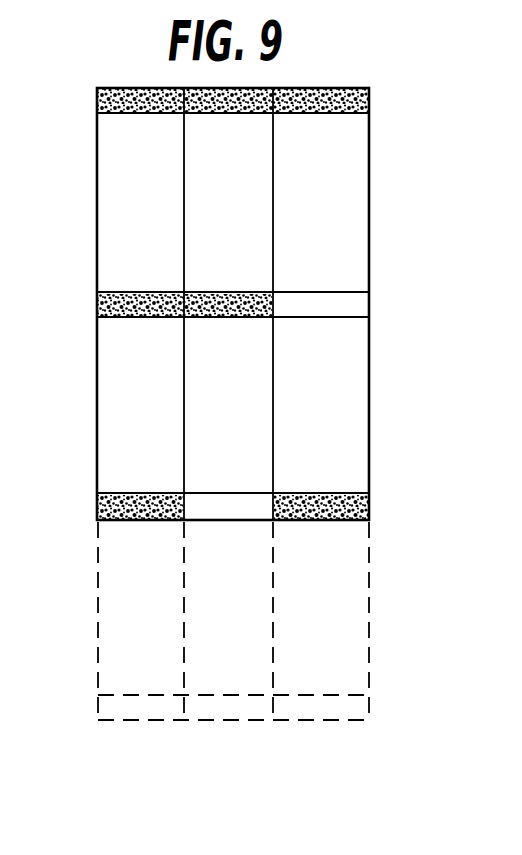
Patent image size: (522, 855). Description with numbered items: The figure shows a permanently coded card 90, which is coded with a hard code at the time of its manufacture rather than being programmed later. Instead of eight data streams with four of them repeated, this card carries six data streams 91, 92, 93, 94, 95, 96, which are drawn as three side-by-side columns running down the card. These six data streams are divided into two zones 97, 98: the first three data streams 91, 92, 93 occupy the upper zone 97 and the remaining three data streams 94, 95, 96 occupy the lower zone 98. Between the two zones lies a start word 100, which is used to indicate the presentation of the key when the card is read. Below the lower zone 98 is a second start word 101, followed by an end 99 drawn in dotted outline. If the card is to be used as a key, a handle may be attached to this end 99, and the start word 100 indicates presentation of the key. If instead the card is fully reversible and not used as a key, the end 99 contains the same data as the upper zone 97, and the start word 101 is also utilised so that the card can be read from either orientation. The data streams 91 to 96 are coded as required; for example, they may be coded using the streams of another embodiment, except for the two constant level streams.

The permanently coded card 90 is at (379, 176).
The data stream 91 is at (162, 215).
The data stream 92 is at (252, 215).
The data stream 93 is at (345, 218).
The data stream 94 is at (166, 421).
The data stream 95 is at (254, 421).
The data stream 96 is at (348, 422).
The upper zone 97 is at (97, 115).
The zone 98 is at (97, 318).
The end 99 is at (371, 522).
The start word 100 is at (377, 309).
The start word 101 is at (374, 509).